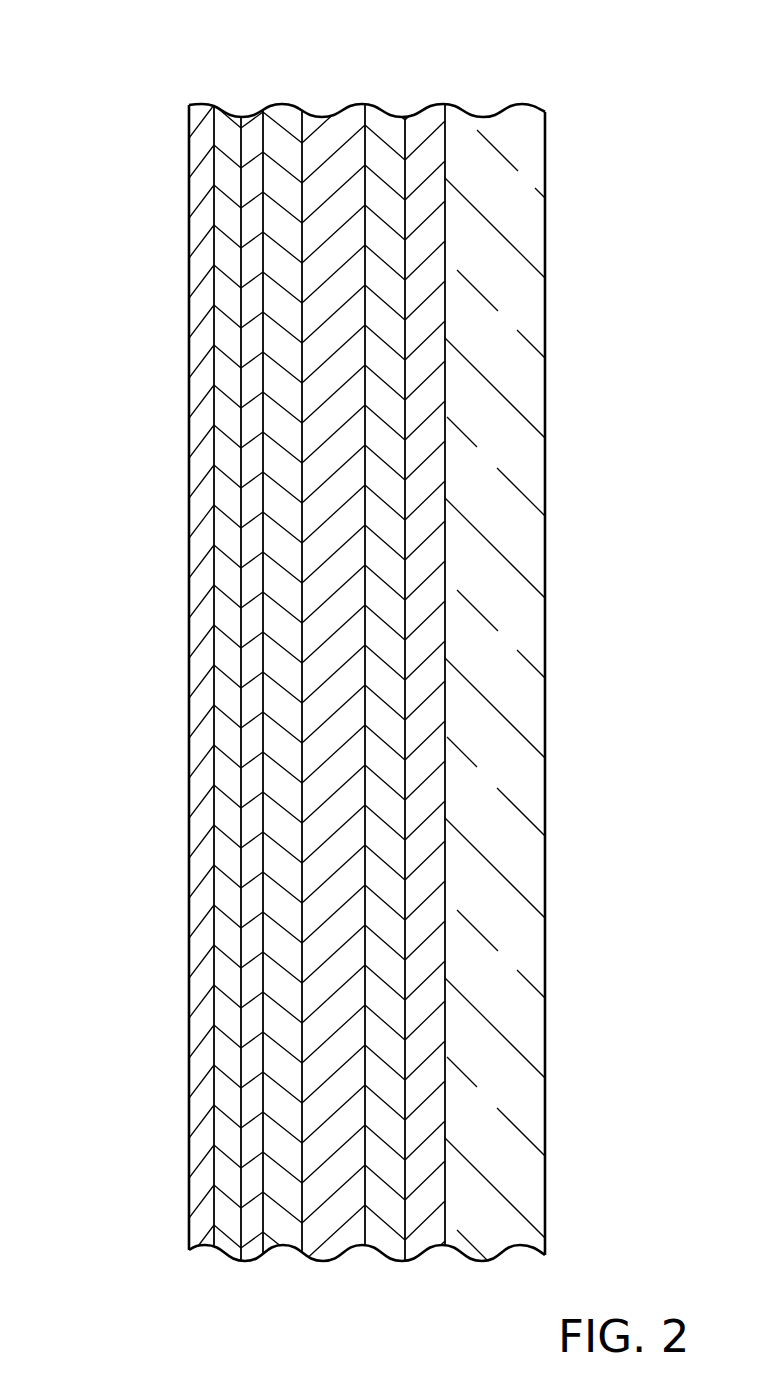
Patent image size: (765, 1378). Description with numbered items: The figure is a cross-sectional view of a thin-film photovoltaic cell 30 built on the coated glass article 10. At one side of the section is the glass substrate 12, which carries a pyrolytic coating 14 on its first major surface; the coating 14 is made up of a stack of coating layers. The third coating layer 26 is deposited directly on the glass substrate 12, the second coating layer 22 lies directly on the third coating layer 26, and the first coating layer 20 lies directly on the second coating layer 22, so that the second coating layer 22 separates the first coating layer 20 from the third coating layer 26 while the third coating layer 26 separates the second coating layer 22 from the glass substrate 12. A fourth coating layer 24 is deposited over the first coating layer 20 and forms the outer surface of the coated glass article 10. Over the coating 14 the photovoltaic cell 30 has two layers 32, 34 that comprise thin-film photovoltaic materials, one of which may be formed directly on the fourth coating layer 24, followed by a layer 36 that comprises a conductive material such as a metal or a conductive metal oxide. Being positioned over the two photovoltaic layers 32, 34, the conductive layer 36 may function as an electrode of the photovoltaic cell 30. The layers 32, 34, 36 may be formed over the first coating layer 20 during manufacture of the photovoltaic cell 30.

The coated glass article 10 is at (617, 65).
The glass substrate 12 is at (478, 1262).
The coating 14 is at (263, 1273).
The first coating layer 20 is at (342, 110).
The second coating layer 22 is at (387, 112).
The fourth coating layer 24 is at (282, 113).
The third coating layer 26 is at (430, 105).
The photovoltaic cell 30 is at (127, 90).
The layer comprising thin-film photovoltaic material 32 is at (255, 128).
The layer comprising thin-film photovoltaic material 34 is at (227, 125).
The layer comprising conductive material 36 is at (202, 122).